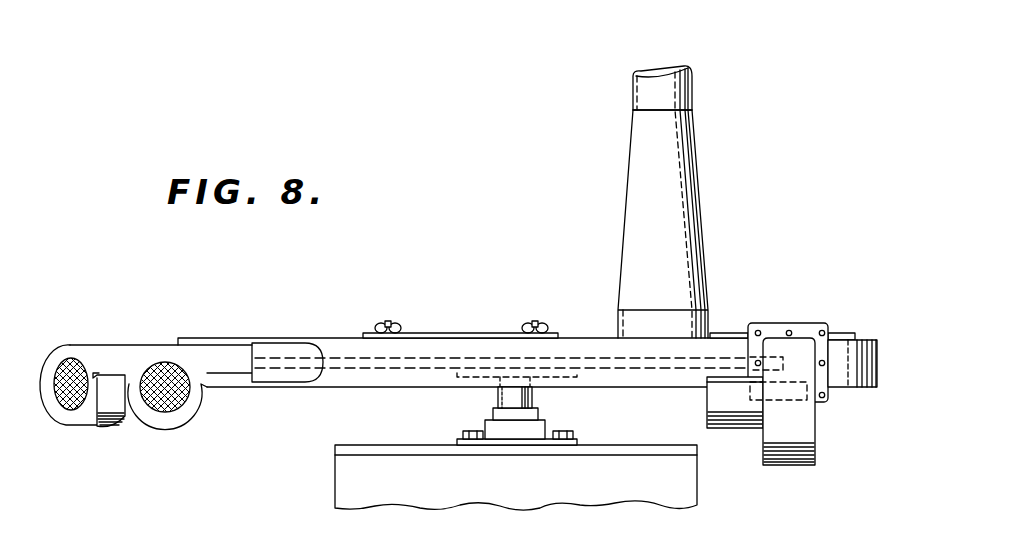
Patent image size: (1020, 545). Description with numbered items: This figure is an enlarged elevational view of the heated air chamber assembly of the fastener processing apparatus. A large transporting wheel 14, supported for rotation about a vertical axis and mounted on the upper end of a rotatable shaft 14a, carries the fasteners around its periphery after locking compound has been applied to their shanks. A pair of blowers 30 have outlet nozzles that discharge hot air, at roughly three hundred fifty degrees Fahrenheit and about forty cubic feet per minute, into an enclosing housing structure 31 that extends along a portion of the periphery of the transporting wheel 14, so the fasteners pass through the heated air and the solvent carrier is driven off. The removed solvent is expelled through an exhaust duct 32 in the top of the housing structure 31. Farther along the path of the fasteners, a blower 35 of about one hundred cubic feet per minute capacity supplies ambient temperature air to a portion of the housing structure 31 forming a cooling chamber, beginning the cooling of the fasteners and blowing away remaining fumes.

The transporting wheel 14 is at (617, 368).
The rotatable shaft 14a is at (498, 402).
The blowers 30 is at (150, 423).
The enclosing housing structure 31 is at (353, 333).
The exhaust duct 32 is at (700, 202).
The blower 35 is at (808, 435).